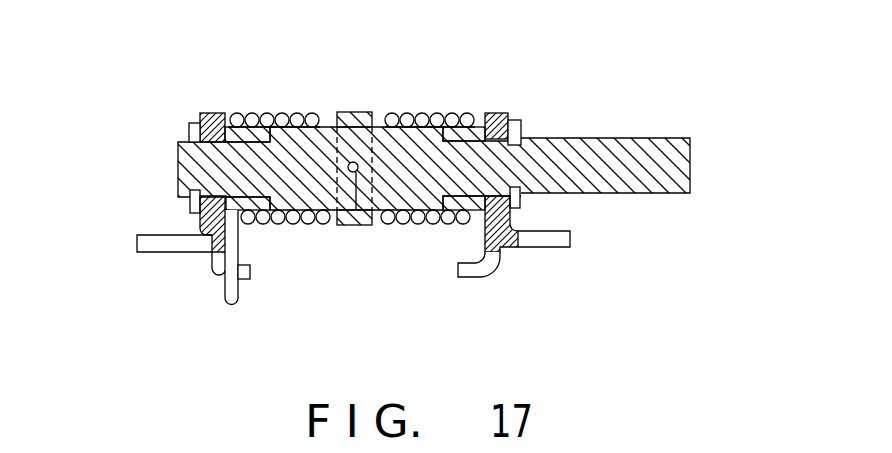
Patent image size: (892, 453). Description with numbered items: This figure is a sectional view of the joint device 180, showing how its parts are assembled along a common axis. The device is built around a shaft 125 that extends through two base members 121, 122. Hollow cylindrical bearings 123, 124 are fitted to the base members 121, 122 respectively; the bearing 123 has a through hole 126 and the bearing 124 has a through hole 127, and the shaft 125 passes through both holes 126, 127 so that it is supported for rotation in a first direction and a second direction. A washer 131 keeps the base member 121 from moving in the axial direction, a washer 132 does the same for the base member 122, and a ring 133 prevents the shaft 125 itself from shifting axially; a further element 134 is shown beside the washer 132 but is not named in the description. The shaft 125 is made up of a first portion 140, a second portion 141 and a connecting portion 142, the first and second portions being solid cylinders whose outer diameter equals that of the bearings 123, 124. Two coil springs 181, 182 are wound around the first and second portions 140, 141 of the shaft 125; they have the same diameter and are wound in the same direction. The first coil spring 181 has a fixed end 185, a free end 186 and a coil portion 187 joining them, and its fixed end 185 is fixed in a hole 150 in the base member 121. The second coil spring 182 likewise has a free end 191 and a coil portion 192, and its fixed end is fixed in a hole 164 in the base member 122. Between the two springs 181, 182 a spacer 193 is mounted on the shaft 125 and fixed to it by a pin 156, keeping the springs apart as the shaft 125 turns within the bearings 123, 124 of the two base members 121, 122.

The joint device 180 is at (149, 301).
The first coil spring 181 is at (246, 99).
The second coil spring 182 is at (474, 94).
The base member 121 is at (203, 254).
The base member 122 is at (502, 250).
The bearing 123 is at (228, 142).
The bearing 124 is at (475, 138).
The shaft 125 is at (328, 127).
The through hole 126 is at (228, 198).
The through hole 127 is at (503, 175).
The washer 131 is at (203, 118).
The washer 132 is at (505, 113).
The ring 133 is at (190, 132).
The right spacer 134 is at (520, 130).
The first portion 140 is at (299, 113).
The second portion 141 is at (407, 112).
The connecting portion 142 is at (676, 138).
The hole 150 is at (245, 280).
The pin 156 is at (355, 224).
The hole 164 is at (486, 272).
The fixed end 185 is at (220, 286).
The free end 186 is at (325, 226).
The coil portion 187 is at (280, 112).
The free end 191 is at (386, 226).
The coil portion 192 is at (438, 113).
The spacer 193 is at (357, 112).